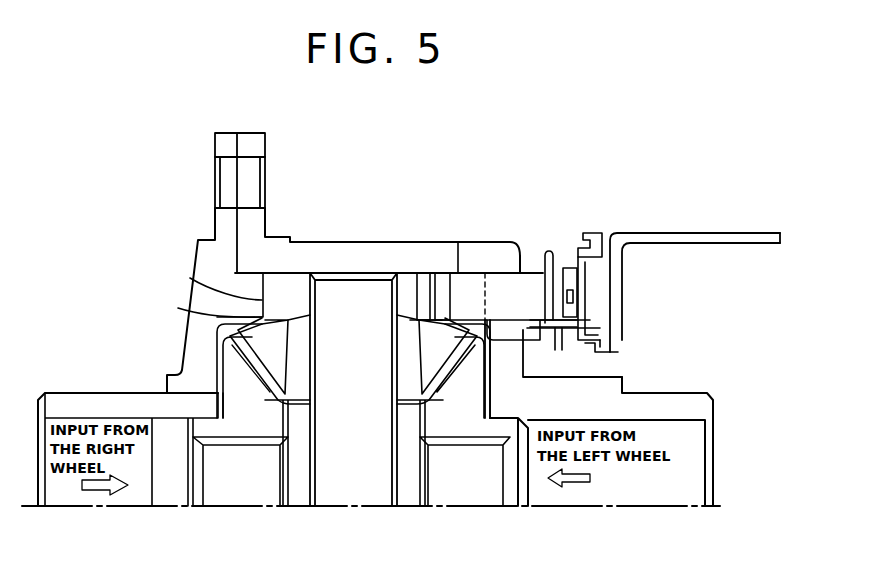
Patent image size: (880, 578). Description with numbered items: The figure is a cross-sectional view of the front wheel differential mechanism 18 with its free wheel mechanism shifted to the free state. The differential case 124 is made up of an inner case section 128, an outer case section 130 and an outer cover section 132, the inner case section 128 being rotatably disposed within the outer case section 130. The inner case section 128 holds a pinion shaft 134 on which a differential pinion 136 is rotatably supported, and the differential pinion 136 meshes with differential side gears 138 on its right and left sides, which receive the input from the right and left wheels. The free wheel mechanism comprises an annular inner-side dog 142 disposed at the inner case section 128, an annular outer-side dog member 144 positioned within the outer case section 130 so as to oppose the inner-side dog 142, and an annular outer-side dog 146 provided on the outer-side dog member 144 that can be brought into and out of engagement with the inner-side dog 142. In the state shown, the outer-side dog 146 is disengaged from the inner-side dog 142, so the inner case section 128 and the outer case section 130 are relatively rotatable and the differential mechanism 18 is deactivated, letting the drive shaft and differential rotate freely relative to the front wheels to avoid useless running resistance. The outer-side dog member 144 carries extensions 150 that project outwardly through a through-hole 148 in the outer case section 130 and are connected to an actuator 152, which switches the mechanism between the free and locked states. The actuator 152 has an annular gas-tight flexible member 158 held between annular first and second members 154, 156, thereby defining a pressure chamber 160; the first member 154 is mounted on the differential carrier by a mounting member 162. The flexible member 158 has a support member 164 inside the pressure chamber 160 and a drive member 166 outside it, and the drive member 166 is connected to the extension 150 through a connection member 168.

The front wheel differential mechanism 18 is at (100, 243).
The differential case 124 is at (196, 238).
The inner case section 128 is at (222, 283).
The outer case section 130 is at (262, 136).
The outer cover section 132 is at (218, 150).
The pinion shaft 134 is at (328, 290).
The differential pinion 136 is at (225, 330).
The differential side gears 138 is at (232, 405).
The inner-side dog 142 is at (390, 241).
The outer-side dog member 144 is at (467, 241).
The outer-side dog 146 is at (421, 272).
The through-hole 148 is at (530, 276).
The extensions 150 is at (503, 292).
The actuator 152 is at (654, 229).
The first member 154 is at (612, 247).
The second member 156 is at (597, 247).
The flexible member 158 is at (578, 262).
The pressure chamber 160 is at (597, 275).
The mounting member 162 is at (737, 234).
The support member 164 is at (597, 333).
The drive member 166 is at (583, 373).
The connection member 168 is at (546, 256).